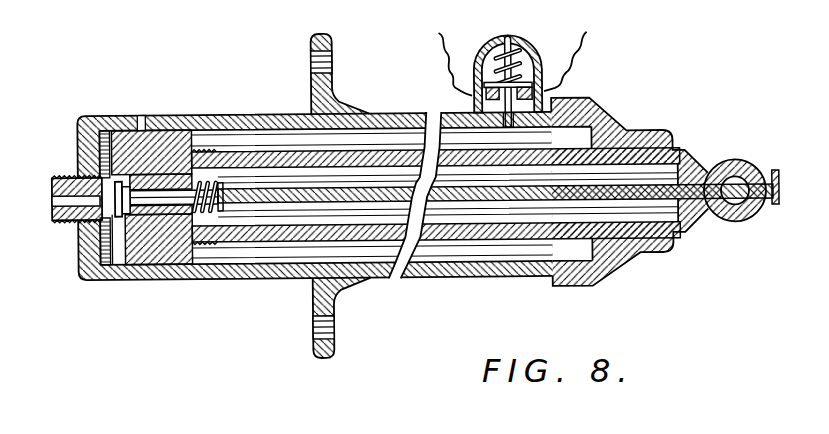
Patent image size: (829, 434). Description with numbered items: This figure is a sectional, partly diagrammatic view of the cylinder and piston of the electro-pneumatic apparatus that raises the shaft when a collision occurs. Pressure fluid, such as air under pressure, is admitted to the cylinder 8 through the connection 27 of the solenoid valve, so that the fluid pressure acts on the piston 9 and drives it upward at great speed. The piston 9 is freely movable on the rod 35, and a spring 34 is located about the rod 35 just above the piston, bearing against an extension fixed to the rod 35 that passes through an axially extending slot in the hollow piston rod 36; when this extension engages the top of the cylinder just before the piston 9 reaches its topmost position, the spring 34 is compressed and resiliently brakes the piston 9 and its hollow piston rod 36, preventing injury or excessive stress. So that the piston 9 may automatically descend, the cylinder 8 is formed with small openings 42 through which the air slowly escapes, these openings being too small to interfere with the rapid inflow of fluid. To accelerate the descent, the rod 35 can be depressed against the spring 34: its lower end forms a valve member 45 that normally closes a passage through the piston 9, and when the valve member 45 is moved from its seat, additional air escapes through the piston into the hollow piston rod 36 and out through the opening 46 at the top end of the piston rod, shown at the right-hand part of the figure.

The cylinder 8 is at (277, 268).
The piston 9 is at (156, 262).
The connection 27 is at (62, 175).
The spring 34 is at (216, 207).
The rod 35 is at (388, 197).
The hollow piston rod 36 is at (492, 227).
The small openings 42 is at (142, 128).
The valve member 45 is at (120, 272).
The opening 46 is at (694, 167).